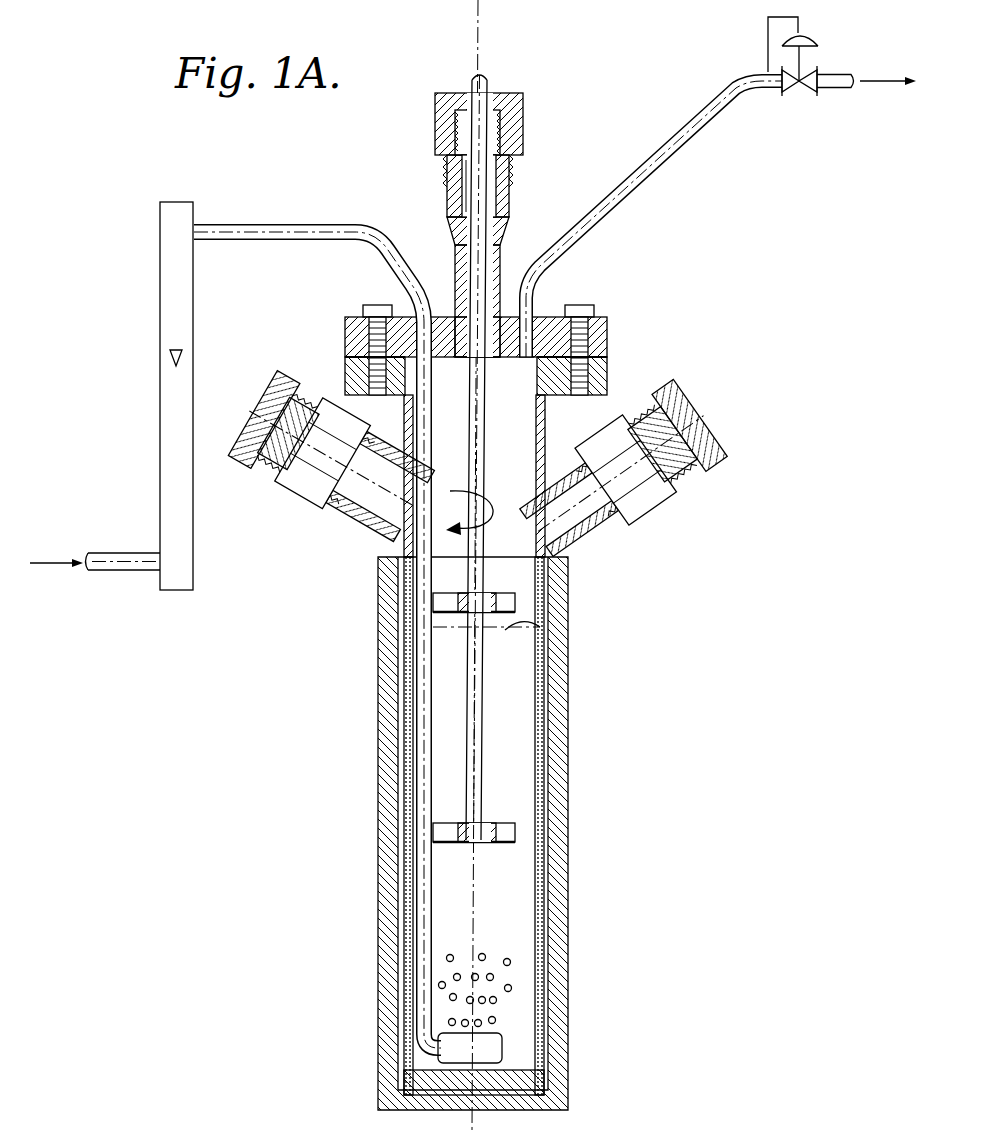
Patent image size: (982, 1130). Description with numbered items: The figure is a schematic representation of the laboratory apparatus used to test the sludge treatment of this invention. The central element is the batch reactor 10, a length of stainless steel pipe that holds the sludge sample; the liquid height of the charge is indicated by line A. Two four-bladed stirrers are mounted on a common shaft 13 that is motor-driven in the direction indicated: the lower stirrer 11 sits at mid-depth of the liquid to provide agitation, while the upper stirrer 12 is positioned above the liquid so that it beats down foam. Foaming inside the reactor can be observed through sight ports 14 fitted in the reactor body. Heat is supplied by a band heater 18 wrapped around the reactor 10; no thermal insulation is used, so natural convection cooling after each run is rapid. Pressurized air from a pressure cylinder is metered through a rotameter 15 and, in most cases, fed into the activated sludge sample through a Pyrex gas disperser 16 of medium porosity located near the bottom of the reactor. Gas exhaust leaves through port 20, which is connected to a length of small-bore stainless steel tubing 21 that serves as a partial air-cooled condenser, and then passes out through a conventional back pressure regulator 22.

The batch reactor 10 is at (570, 422).
The lower stirrer 11 is at (500, 832).
The upper stirrer 12 is at (505, 606).
The common shaft 13 is at (476, 705).
The sight ports 14 is at (285, 428).
The rotameter 15 is at (148, 478).
The Pyrex gas disperser 16 is at (510, 1040).
The band heater 18 is at (572, 900).
The port 20 is at (530, 362).
The stainless steel tubing 21 is at (655, 152).
The back pressure regulator 22 is at (799, 98).
The line A is at (560, 632).